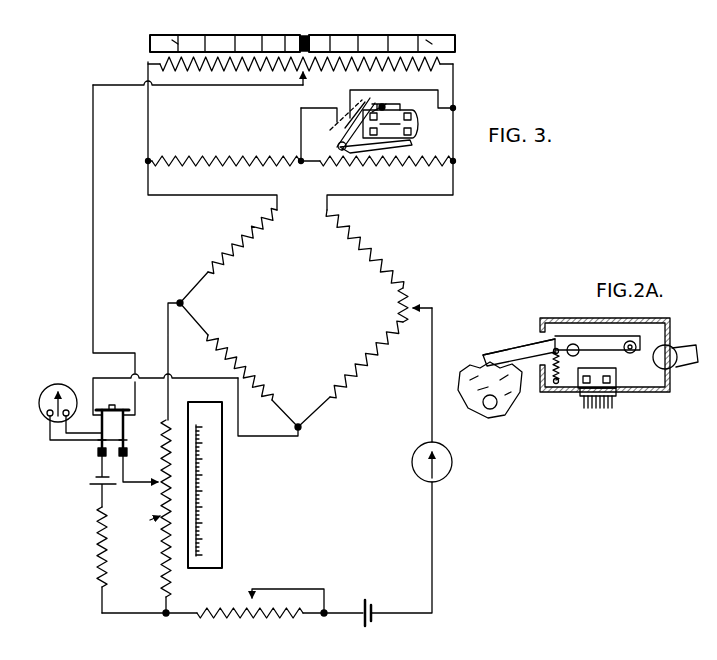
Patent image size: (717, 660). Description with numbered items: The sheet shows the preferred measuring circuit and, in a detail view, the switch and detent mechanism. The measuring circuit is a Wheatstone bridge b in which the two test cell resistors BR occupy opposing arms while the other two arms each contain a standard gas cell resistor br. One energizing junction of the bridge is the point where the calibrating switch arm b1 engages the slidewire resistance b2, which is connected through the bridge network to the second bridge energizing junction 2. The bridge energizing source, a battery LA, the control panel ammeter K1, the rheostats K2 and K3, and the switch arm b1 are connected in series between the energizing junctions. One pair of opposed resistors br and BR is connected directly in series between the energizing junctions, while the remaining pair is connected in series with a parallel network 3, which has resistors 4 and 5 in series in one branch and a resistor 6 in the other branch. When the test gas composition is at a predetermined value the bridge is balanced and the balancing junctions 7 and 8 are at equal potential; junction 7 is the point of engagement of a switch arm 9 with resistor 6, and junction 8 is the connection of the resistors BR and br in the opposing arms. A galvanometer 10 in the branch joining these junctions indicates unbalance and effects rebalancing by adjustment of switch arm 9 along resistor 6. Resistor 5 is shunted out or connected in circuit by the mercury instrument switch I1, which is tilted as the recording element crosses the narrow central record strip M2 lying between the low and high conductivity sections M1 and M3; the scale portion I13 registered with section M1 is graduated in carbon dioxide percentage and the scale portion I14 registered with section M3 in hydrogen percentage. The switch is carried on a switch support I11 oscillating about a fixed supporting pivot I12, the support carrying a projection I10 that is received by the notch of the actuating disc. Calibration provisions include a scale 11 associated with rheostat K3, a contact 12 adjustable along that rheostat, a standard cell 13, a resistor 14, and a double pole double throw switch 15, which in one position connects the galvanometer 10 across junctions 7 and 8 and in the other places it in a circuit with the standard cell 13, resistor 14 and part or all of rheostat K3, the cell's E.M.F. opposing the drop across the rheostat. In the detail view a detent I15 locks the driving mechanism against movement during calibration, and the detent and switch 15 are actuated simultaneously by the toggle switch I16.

In FIG. 3, the low conductivity record strip section M1 is at (225, 26).
In FIG. 3, the narrow central record strip section M2 is at (319, 25).
In FIG. 3, the high conductivity record strip section M3 is at (382, 26).
In FIG. 3, the scale portion I13 is at (176, 42).
In FIG. 3, the scale portion I14 is at (428, 42).
In FIG. 3, the resistor 6 is at (202, 66).
In FIG. 3, the bridge balancing junction 7 is at (300, 70).
In FIG. 3, the switch arm 9 is at (304, 85).
In FIG. 3, the resistor 4 is at (230, 166).
In FIG. 3, the resistor 5 is at (398, 167).
In FIG. 3, the parallel network 3 is at (263, 146).
In FIG. 3, the projection I10 is at (336, 129).
In FIG. 3, the instrument switch I1 is at (418, 122).
In FIG. 3, the switch support I11 is at (350, 114).
In FIG. 3, the supporting pivot I12 is at (382, 106).
In FIG. 3, the test cell resistors BR is at (232, 248).
In FIG. 3, the standard gas cell resistors br is at (366, 252).
In FIG. 3, the bridge energizing junction 2 is at (178, 300).
In FIG. 3, the bridge balancing junction 8 is at (300, 428).
In FIG. 3, the Wheatstone bridge b is at (326, 306).
In FIG. 3, the slidewire resistance b2 is at (408, 294).
In FIG. 3, the calibrating switch arm b1 is at (426, 308).
In FIG. 3, the control panel ammeter K1 is at (444, 454).
In FIG. 3, the battery LA is at (371, 606).
In FIG. 3, the rheostat K2 is at (272, 620).
In FIG. 3, the galvanometer 10 is at (47, 392).
In FIG. 3, the double pole double throw switch 15 is at (142, 461).
In FIG. 2A, the double pole double throw switch 15 is at (598, 386).
In FIG. 3, the standard cell 13 is at (94, 484).
In FIG. 3, the resistor 14 is at (97, 548).
In FIG. 3, the contact 12 is at (160, 486).
In FIG. 3, the rheostat K3 is at (152, 519).
In FIG. 3, the scale 11 is at (224, 497).
In FIG. 2A, the detent I15 is at (482, 358).
In FIG. 2A, the toggle switch I16 is at (628, 418).